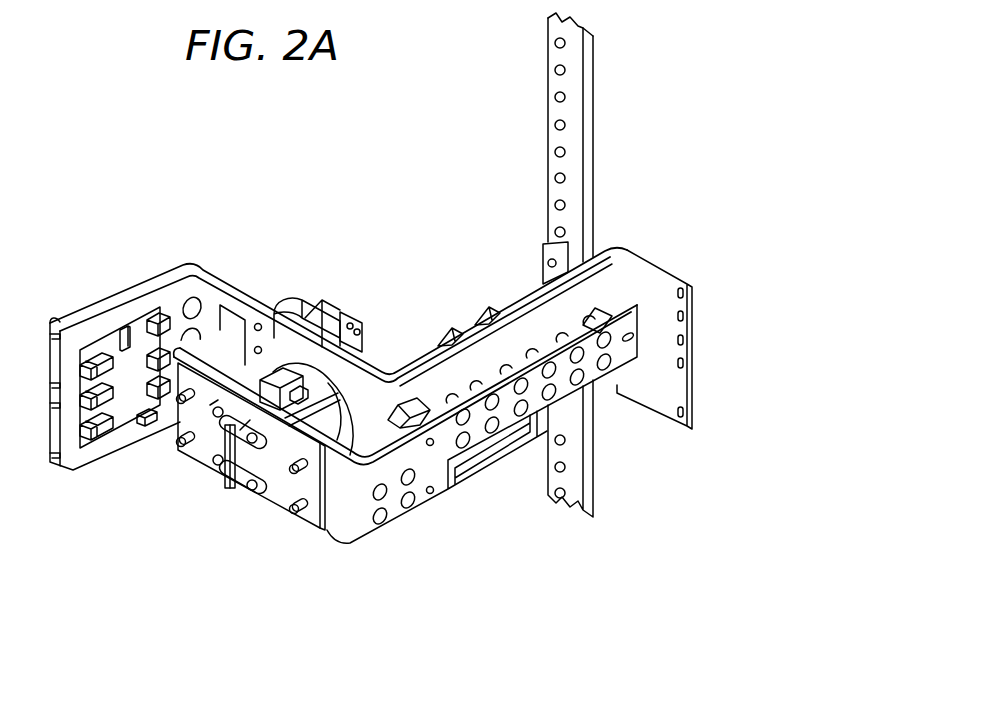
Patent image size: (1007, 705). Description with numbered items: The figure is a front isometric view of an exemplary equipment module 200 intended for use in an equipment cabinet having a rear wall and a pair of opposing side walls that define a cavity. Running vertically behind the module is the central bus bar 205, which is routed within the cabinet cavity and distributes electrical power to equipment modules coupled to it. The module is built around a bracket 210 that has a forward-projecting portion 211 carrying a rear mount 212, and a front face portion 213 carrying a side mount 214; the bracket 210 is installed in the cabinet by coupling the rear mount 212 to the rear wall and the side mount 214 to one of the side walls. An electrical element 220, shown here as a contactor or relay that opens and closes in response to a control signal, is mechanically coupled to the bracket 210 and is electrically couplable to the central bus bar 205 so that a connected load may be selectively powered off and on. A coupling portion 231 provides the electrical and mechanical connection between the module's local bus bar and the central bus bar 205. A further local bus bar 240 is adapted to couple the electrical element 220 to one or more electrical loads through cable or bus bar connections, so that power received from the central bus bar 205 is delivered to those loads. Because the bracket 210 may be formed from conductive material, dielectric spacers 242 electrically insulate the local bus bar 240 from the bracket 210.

The equipment module 200 is at (356, 246).
The central bus bar 205 is at (580, 25).
The bracket 210 is at (186, 264).
The forward-projecting portion 211 is at (520, 292).
The rear mount 212 is at (665, 268).
The front face portion 213 is at (273, 343).
The side mount 214 is at (68, 320).
The electrical element 220 is at (286, 493).
The coupling portion 231 is at (550, 277).
The local bus bar 240 is at (420, 500).
The dielectric spacers 242 is at (597, 303).